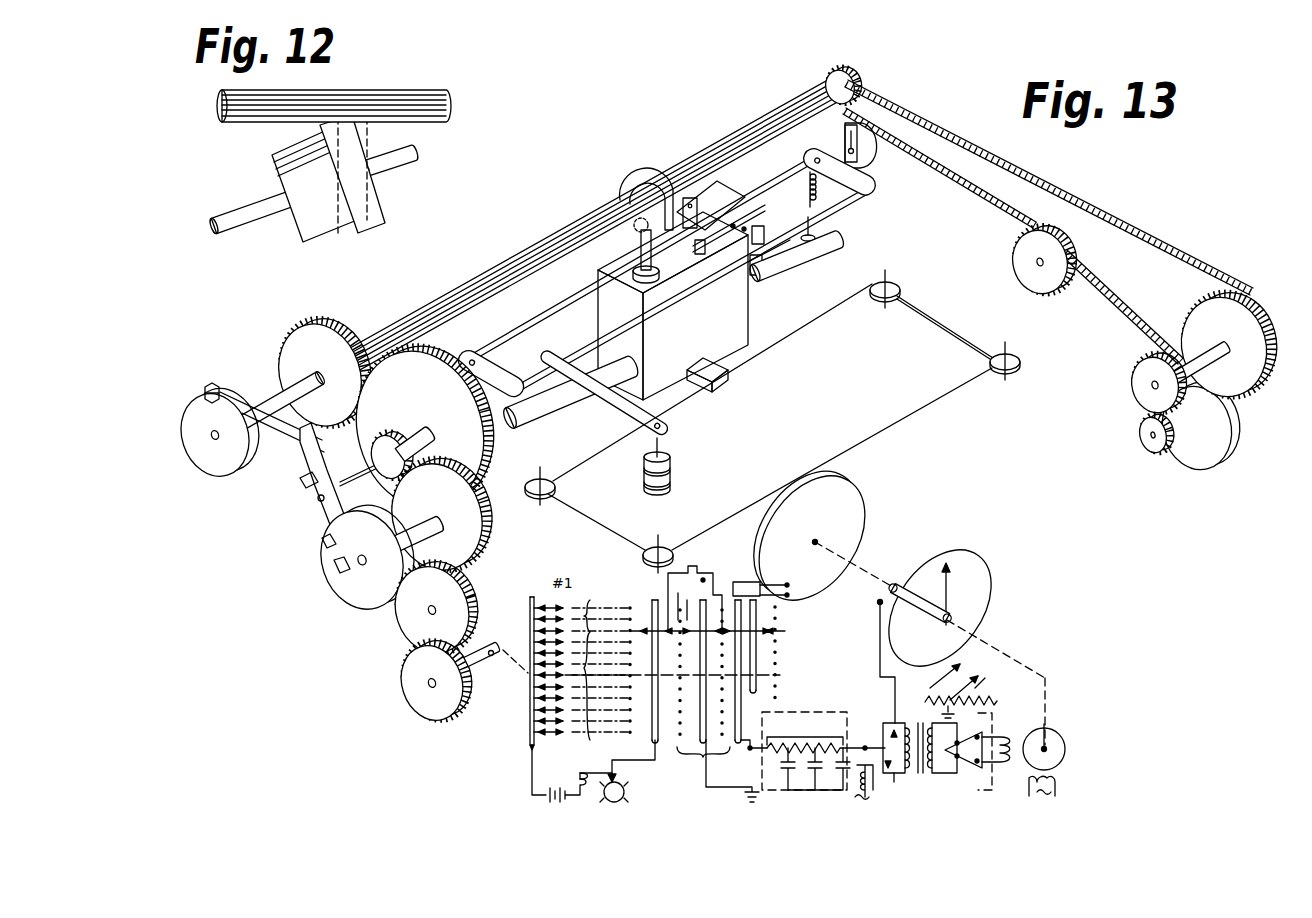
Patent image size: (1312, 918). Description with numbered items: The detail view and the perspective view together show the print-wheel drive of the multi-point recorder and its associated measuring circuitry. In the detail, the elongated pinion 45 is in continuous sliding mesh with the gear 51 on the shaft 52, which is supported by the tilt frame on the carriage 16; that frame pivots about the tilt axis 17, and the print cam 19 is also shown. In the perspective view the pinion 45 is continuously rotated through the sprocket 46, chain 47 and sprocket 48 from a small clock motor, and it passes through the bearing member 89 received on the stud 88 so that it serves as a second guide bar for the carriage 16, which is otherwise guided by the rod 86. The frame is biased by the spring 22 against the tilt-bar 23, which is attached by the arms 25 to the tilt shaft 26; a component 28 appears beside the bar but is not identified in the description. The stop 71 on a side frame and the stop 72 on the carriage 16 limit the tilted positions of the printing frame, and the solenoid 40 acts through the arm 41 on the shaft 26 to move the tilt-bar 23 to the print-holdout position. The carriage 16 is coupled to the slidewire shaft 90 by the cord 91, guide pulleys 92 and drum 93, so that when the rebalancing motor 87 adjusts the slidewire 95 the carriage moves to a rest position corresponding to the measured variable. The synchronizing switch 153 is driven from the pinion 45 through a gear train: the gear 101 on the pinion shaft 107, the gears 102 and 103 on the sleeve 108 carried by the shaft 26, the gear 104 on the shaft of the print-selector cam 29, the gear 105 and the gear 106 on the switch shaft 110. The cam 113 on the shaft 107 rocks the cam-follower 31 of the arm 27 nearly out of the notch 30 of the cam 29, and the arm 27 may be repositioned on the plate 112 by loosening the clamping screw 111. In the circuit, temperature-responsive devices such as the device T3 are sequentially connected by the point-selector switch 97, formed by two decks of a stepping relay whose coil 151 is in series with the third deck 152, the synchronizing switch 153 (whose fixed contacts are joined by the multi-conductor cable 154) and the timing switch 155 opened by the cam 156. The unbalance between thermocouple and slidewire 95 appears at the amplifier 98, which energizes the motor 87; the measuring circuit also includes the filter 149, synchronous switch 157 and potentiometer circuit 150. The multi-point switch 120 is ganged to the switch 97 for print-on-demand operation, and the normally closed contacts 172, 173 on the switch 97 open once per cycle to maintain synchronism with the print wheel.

In FIG. 12, the elongated pinion 45 is at (422, 90).
In FIG. 13, the elongated pinion 45 is at (442, 300).
In FIG. 12, the print cam 19 is at (284, 157).
In FIG. 12, the tilt axis 17 is at (370, 170).
In FIG. 12, the gear 51 is at (385, 214).
In FIG. 12, the shaft 52 is at (252, 212).
In FIG. 13, the sprocket 46 is at (850, 76).
In FIG. 13, the chain 47 is at (1147, 255).
In FIG. 13, the sprocket 48 is at (1221, 318).
In FIG. 13, the stop 71 is at (858, 130).
In FIG. 13, the tilt-bar 23 is at (783, 181).
In FIG. 13, the tilt shaft 26 is at (837, 208).
In FIG. 13, the arms 25 is at (514, 370).
In FIG. 13, the spring 28 is at (808, 206).
In FIG. 13, the spring 22 is at (738, 237).
In FIG. 13, the bearing member 89 is at (642, 180).
In FIG. 13, the stud 88 is at (640, 247).
In FIG. 13, the carriage 16 is at (716, 331).
In FIG. 13, the stop 72 is at (757, 262).
In FIG. 13, the rod 86 is at (830, 254).
In FIG. 13, the arm 41 is at (620, 413).
In FIG. 13, the solenoid 40 is at (670, 472).
In FIG. 13, the cord 91 is at (798, 335).
In FIG. 13, the guide pulleys 92 is at (998, 360).
In FIG. 13, the gear 101 is at (313, 324).
In FIG. 13, the pinion shaft 107 is at (282, 372).
In FIG. 13, the cam 113 is at (228, 456).
In FIG. 13, the arm 27 is at (306, 455).
In FIG. 13, the plate 112 is at (330, 478).
In FIG. 13, the clamping screw 111 is at (302, 486).
In FIG. 13, the gear 102 is at (482, 452).
In FIG. 13, the gear 103 is at (385, 446).
In FIG. 13, the sleeve 108 is at (412, 440).
In FIG. 13, the gear 104 is at (470, 548).
In FIG. 13, the selector cam 29 is at (347, 580).
In FIG. 13, the cam-follower 31 is at (322, 543).
In FIG. 13, the notch 30 is at (336, 568).
In FIG. 13, the gear 105 is at (412, 623).
In FIG. 13, the gear 106 is at (427, 700).
In FIG. 13, the shaft 110 is at (512, 660).
In FIG. 13, the drum 93 is at (858, 506).
In FIG. 13, the synchronizing switch 153 is at (531, 600).
In FIG. 13, the multi-conductor cable 154 is at (592, 598).
In FIG. 13, the third deck 152 is at (647, 620).
In FIG. 13, the point-selector switch 97 is at (675, 689).
In FIG. 13, the temperature-responsive device T3 is at (695, 589).
In FIG. 13, the multi-point switch 120 is at (745, 582).
In FIG. 13, the normally closed contact 172 is at (778, 582).
In FIG. 13, the normally closed contact 173 is at (777, 598).
In FIG. 13, the timing switch 155 is at (635, 760).
In FIG. 13, the cam 156 is at (626, 792).
In FIG. 13, the motor coil 151 is at (584, 777).
In FIG. 13, the filter 149 is at (795, 737).
In FIG. 13, the synchronous switch 157 is at (875, 782).
In FIG. 13, the amplifier 98 is at (972, 770).
In FIG. 13, the slidewire 95 is at (985, 587).
In FIG. 13, the potentiometer circuit 150 is at (950, 661).
In FIG. 13, the slidewire shaft 90 is at (1047, 693).
In FIG. 13, the rebalancing motor 87 is at (1066, 748).